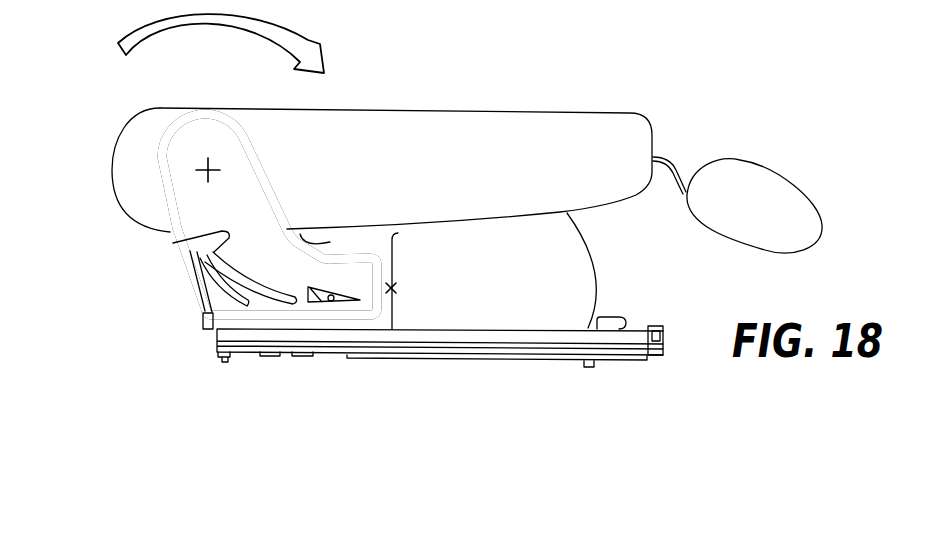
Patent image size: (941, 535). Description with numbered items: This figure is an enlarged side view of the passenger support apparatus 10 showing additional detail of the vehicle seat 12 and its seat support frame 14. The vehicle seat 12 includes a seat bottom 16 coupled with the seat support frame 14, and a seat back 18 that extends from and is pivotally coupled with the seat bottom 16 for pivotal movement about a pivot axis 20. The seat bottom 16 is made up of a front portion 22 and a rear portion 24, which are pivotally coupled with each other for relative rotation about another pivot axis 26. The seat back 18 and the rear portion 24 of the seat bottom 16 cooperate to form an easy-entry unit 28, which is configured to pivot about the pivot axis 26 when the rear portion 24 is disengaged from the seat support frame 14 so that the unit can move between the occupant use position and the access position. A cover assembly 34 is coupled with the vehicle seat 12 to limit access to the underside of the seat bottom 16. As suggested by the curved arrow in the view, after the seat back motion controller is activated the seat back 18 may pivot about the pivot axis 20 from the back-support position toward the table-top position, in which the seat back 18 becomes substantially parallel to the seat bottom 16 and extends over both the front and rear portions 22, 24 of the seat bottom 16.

The passenger support apparatus 10 is at (688, 128).
The vehicle seat 12 is at (752, 195).
The seat support frame 14 is at (647, 338).
The seat bottom 16 is at (423, 310).
The seat back 18 is at (555, 130).
The pivot axis 20 is at (212, 167).
The front portion 22 is at (575, 262).
The rear portion 24 is at (340, 253).
The pivot axis 26 is at (396, 287).
The easy-entry unit 28 is at (146, 104).
The cover assembly 34 is at (177, 263).